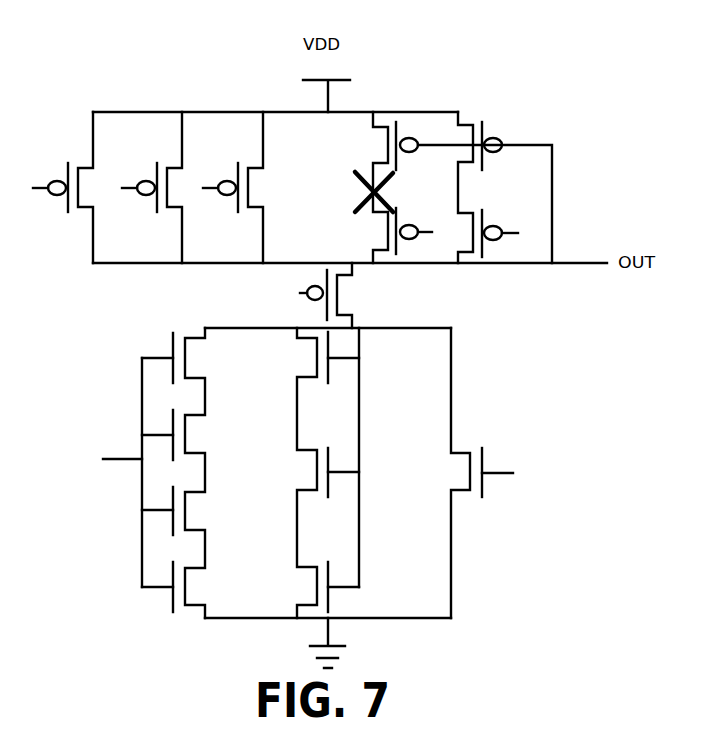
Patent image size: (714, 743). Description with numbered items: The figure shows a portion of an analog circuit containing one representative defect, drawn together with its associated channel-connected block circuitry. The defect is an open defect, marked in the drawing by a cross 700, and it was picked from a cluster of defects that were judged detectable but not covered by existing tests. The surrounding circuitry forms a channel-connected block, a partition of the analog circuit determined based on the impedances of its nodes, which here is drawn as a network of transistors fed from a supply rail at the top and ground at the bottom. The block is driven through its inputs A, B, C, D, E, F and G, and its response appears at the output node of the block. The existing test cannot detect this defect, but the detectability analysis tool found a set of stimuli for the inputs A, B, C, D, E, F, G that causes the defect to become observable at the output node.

The cross 700 is at (360, 182).
The input A is at (50, 190).
The input B is at (276, 208).
The input C is at (220, 190).
The input D is at (500, 233).
The input E is at (320, 295).
The input F is at (138, 472).
The input G is at (507, 472).